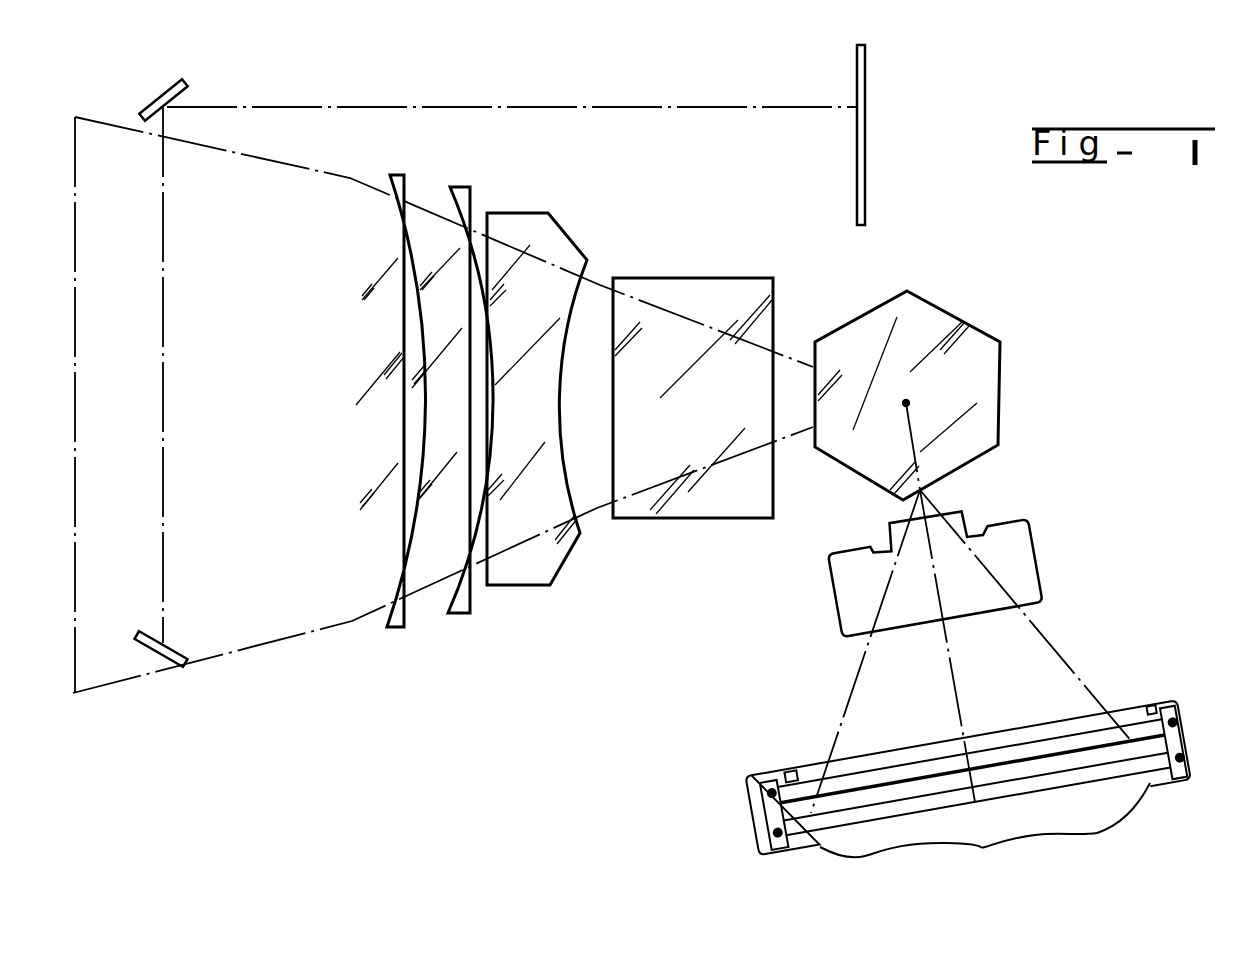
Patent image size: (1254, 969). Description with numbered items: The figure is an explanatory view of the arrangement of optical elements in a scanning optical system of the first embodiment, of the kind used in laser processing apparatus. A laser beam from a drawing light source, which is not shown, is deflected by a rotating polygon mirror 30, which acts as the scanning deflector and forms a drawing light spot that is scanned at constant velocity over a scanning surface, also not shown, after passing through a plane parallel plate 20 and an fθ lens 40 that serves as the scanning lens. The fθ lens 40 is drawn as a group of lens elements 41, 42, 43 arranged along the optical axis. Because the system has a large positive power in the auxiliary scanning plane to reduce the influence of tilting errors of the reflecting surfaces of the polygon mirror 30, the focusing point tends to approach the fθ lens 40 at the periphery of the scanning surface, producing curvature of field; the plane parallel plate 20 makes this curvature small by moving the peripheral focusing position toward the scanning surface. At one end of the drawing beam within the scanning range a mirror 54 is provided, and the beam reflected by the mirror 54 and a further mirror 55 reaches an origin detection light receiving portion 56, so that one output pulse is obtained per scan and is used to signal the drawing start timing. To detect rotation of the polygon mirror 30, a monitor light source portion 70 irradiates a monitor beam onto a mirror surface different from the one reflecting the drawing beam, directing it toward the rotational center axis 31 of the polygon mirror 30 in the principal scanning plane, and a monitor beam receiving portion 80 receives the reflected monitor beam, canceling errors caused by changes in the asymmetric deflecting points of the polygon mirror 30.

The plane parallel plate 20 is at (681, 290).
The polygon mirror 30 is at (944, 395).
The rotational center axis 31 is at (912, 402).
The fθ lens 40 is at (537, 60).
The lens 41 is at (527, 213).
The lens 42 is at (465, 187).
The lens 43 is at (398, 175).
The mirror 54 is at (162, 668).
The mirror 55 is at (167, 94).
The origin detection light receiving portion 56 is at (866, 177).
The monitor light source portion 70 is at (1042, 572).
The monitor beam receiving portion 80 is at (1190, 742).